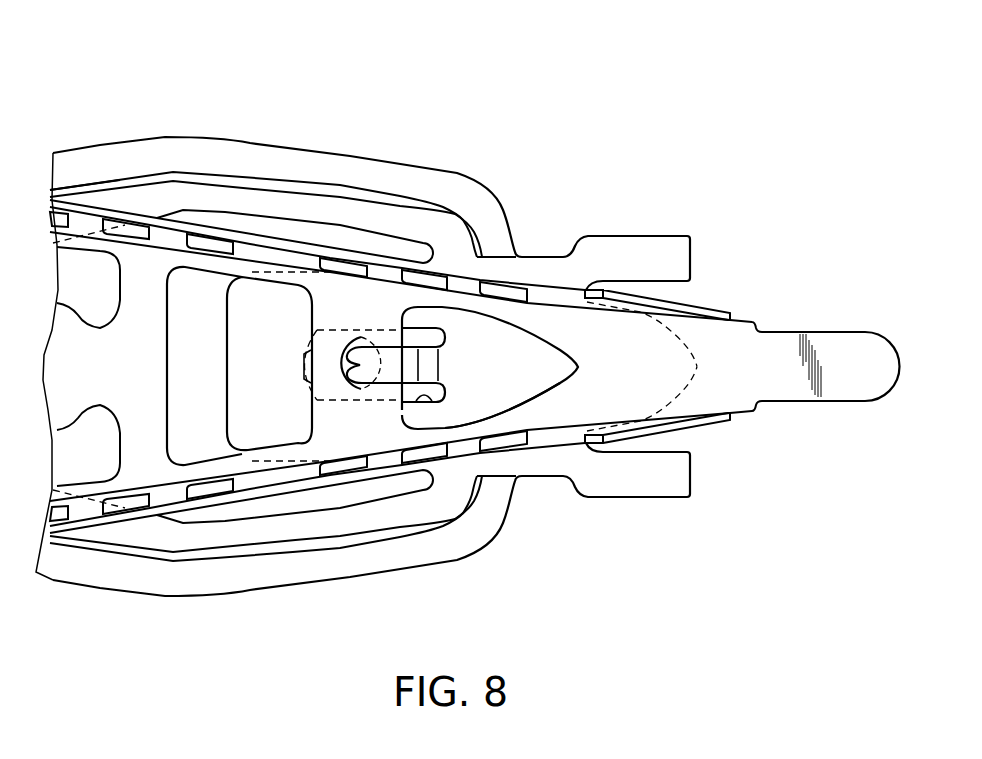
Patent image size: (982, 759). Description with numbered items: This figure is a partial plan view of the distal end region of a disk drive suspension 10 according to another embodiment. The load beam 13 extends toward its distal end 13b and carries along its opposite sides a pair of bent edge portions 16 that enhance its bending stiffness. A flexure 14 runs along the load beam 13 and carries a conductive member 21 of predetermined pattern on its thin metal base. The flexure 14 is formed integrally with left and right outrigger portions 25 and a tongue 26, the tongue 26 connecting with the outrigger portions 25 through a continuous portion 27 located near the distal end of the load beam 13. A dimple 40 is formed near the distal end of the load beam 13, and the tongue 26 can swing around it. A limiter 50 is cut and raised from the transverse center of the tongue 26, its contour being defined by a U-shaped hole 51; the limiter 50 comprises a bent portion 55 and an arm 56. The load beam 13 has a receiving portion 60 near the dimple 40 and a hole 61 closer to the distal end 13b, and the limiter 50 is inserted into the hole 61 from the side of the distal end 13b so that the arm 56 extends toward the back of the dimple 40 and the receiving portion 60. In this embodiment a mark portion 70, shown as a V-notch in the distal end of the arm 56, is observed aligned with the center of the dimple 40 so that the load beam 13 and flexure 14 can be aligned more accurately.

The disk drive suspension 10 is at (450, 64).
The load beam 13 is at (222, 207).
The distal end of the load beam 13b is at (899, 352).
The flexure 14 is at (98, 180).
The bent edge portions 16 is at (163, 233).
The conductive member 21 is at (73, 168).
The outrigger portions 25 is at (263, 198).
The tongue 26 is at (232, 374).
The continuous portion 27 is at (442, 232).
The dimple 40 is at (332, 348).
The limiter 50 is at (447, 308).
The U-shaped hole 51 is at (432, 412).
The bent portion 55 is at (428, 368).
The arm 56 is at (365, 362).
The receiving portion 60 is at (383, 400).
The hole 61 is at (548, 312).
The mark portion 70 is at (345, 372).